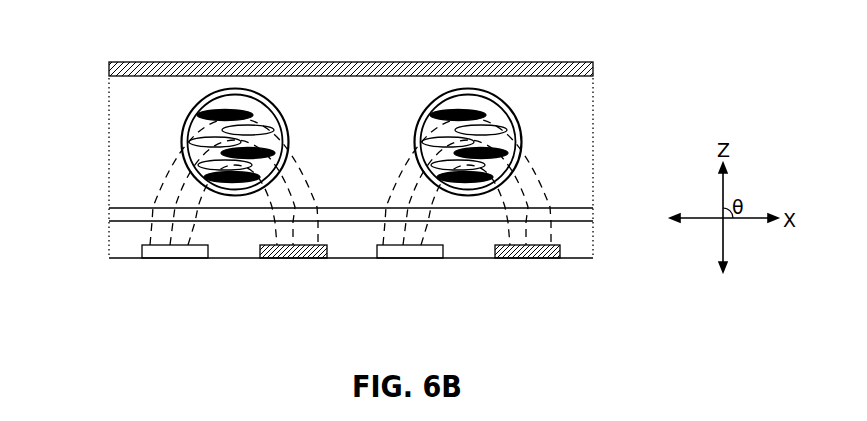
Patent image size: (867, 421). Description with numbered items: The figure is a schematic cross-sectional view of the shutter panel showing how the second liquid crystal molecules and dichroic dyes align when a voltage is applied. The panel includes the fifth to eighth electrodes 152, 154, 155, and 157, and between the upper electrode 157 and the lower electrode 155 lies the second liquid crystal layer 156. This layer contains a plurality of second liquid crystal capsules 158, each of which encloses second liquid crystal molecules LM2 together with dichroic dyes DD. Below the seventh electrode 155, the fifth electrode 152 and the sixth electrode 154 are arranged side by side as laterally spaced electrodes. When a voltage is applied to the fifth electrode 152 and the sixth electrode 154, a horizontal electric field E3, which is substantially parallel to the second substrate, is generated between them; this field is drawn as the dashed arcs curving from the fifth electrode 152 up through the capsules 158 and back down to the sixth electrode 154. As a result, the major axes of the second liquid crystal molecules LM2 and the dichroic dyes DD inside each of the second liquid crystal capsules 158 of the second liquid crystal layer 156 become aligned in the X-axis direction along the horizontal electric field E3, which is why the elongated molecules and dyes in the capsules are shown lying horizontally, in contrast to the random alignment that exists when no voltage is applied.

The eighth electrode 157 is at (108, 70).
The second liquid crystal layer 156 is at (127, 140).
The seventh electrode 155 is at (127, 216).
The fifth electrode 152 is at (180, 258).
The sixth electrode 154 is at (292, 258).
The second liquid crystal capsule 158 is at (659, 102).
The second liquid crystal molecule LM2 is at (497, 125).
The dichroic dye DD is at (507, 143).
The horizontal electric field E3 is at (350, 181).